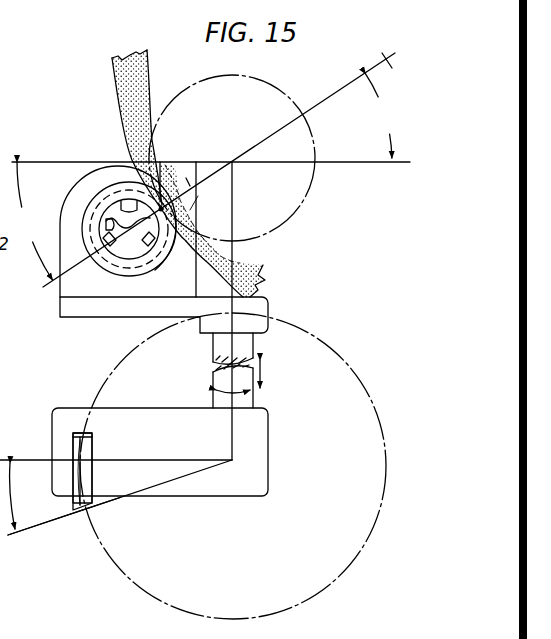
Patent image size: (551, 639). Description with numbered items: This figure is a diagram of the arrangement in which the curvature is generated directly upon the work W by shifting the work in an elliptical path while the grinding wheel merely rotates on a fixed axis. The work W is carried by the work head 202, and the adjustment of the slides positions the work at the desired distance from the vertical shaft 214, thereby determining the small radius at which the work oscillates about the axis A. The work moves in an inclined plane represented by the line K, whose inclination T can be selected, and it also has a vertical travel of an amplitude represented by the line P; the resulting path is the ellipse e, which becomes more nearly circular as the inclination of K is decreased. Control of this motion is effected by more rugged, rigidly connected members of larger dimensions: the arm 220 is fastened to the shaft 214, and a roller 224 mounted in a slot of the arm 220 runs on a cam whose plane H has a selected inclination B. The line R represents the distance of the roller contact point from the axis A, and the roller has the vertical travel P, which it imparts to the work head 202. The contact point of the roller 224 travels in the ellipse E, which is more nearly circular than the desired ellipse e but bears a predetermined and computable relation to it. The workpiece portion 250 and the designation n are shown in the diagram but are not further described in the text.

The tubular workpiece 250 is at (122, 112).
The work head 202 is at (164, 247).
The work W is at (148, 268).
The vertical travel amplitude P is at (83, 490).
The normal direction n is at (186, 174).
The inclined plane line K is at (201, 197).
The generated ellipse e is at (292, 209).
The inclination T is at (204, 177).
The axis A is at (213, 347).
The vertical shaft 214 is at (213, 373).
The arm 220 is at (160, 452).
The inclined plane H is at (233, 466).
The roller 224 is at (73, 508).
The roller contact distance R is at (118, 471).
The inclination angle B is at (11, 496).
The roller contact ellipse E is at (88, 535).